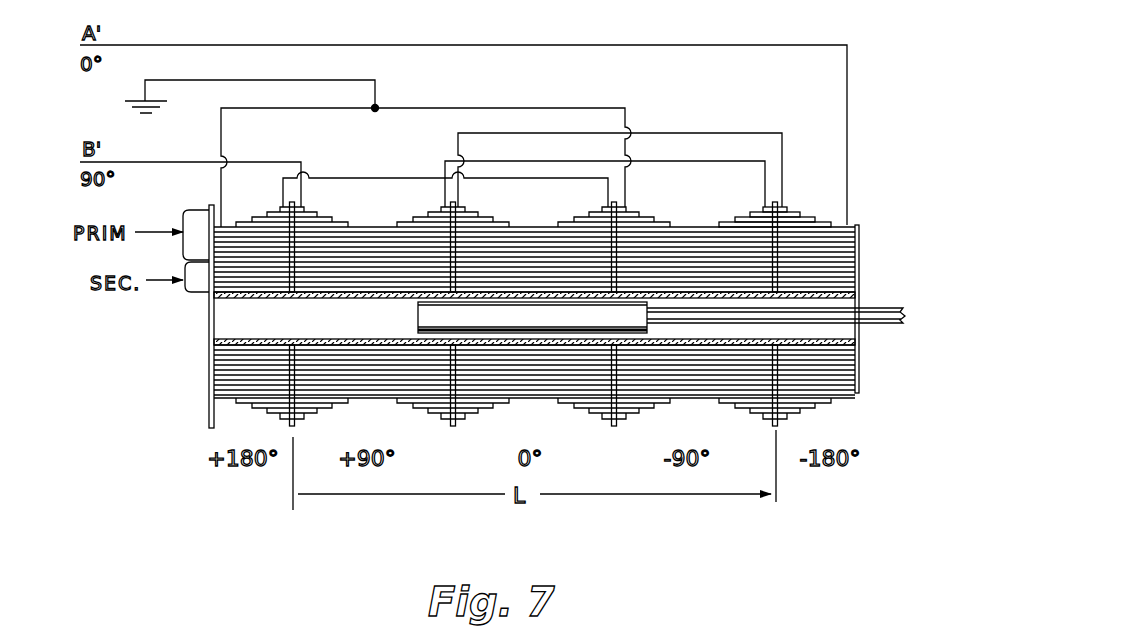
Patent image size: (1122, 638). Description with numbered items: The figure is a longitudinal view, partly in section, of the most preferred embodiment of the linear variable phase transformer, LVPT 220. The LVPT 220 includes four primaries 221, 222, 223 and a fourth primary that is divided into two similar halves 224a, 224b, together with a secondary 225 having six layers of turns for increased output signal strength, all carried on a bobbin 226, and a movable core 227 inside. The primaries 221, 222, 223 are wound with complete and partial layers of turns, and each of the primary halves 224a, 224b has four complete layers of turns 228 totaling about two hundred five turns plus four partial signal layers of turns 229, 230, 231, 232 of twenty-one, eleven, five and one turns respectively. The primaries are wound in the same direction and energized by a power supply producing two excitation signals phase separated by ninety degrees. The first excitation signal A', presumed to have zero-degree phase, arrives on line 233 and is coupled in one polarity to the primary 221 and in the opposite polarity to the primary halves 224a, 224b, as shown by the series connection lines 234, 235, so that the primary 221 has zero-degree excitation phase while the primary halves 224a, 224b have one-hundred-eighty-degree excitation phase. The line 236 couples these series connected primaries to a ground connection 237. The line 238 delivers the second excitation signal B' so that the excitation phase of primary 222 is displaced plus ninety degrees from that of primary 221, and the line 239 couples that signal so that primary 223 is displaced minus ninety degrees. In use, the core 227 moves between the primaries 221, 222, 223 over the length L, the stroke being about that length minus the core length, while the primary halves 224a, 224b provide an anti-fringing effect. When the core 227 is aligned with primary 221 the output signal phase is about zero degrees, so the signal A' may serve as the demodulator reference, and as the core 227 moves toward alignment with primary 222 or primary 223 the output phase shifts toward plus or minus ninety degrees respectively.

The LVPT 220 is at (357, 44).
The primary 221 is at (530, 222).
The primary 222 is at (378, 222).
The primary 223 is at (695, 222).
The primary half 224a is at (243, 212).
The primary half 224b is at (859, 223).
The secondary 225 is at (208, 277).
The bobbin 226 is at (243, 299).
The movable core 227 is at (418, 314).
The complete layers of turns 228 is at (861, 238).
The partial signal layer of turns 229 is at (832, 218).
The partial signal layer of turns 230 is at (818, 213).
The partial signal layer of turns 231 is at (807, 208).
The partial signal layer of turns 232 is at (788, 207).
The line 233 is at (140, 45).
The series connection line 234 is at (718, 133).
The series connection line 235 is at (388, 178).
The line 236 is at (250, 108).
The ground connection 237 is at (211, 80).
The line 238 is at (187, 162).
The line 239 is at (543, 161).